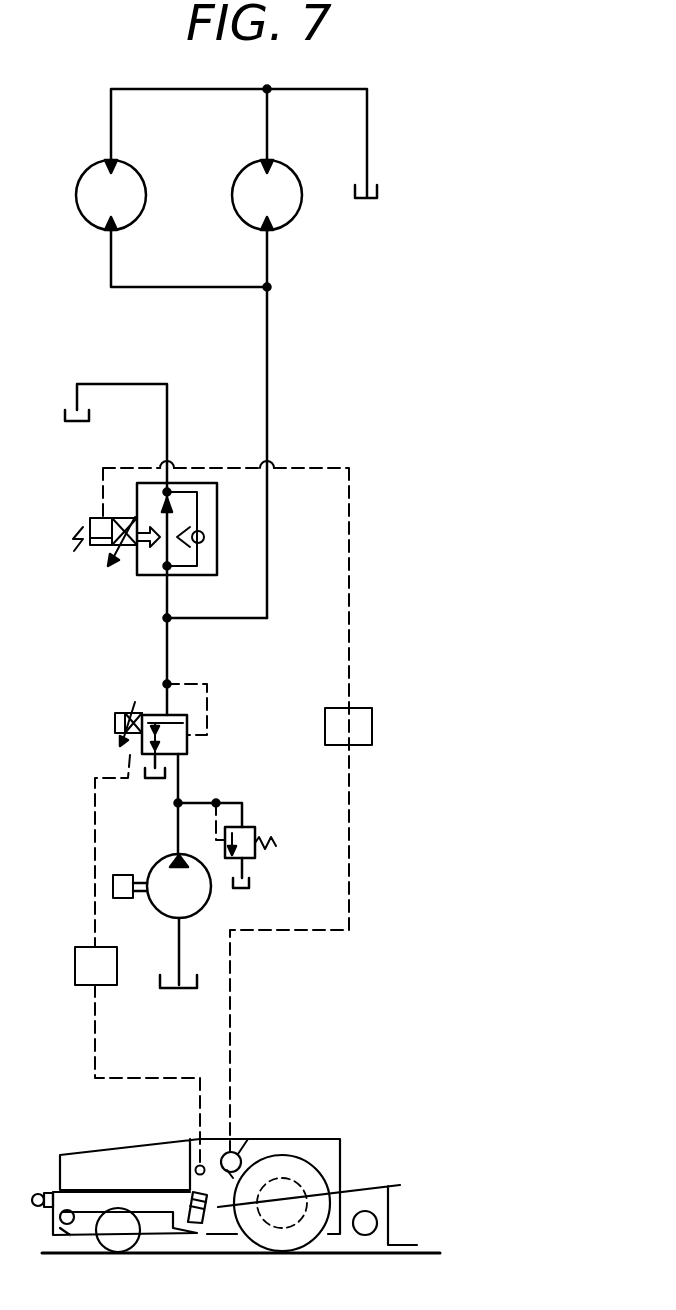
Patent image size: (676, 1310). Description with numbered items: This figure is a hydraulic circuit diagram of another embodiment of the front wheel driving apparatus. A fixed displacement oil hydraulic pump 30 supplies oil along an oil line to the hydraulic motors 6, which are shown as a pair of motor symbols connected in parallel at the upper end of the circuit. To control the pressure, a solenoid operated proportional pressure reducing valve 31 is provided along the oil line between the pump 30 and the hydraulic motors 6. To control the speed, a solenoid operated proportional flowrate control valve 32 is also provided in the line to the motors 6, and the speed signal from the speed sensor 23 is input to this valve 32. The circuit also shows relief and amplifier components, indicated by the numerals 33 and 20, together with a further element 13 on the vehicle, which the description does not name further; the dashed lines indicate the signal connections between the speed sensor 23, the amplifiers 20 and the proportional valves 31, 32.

The hydraulic motor 6 is at (80, 216).
The speed sensor 13 is at (195, 1171).
The amplifier 20 is at (75, 952).
The speed sensor 23 is at (238, 1153).
The fixed displacement oil hydraulic pump 30 is at (203, 907).
The solenoid operated proportional pressure reducing valve 31 is at (130, 752).
The solenoid operated proportional flowrate control valve 32 is at (137, 575).
The relief valve 33 is at (245, 827).